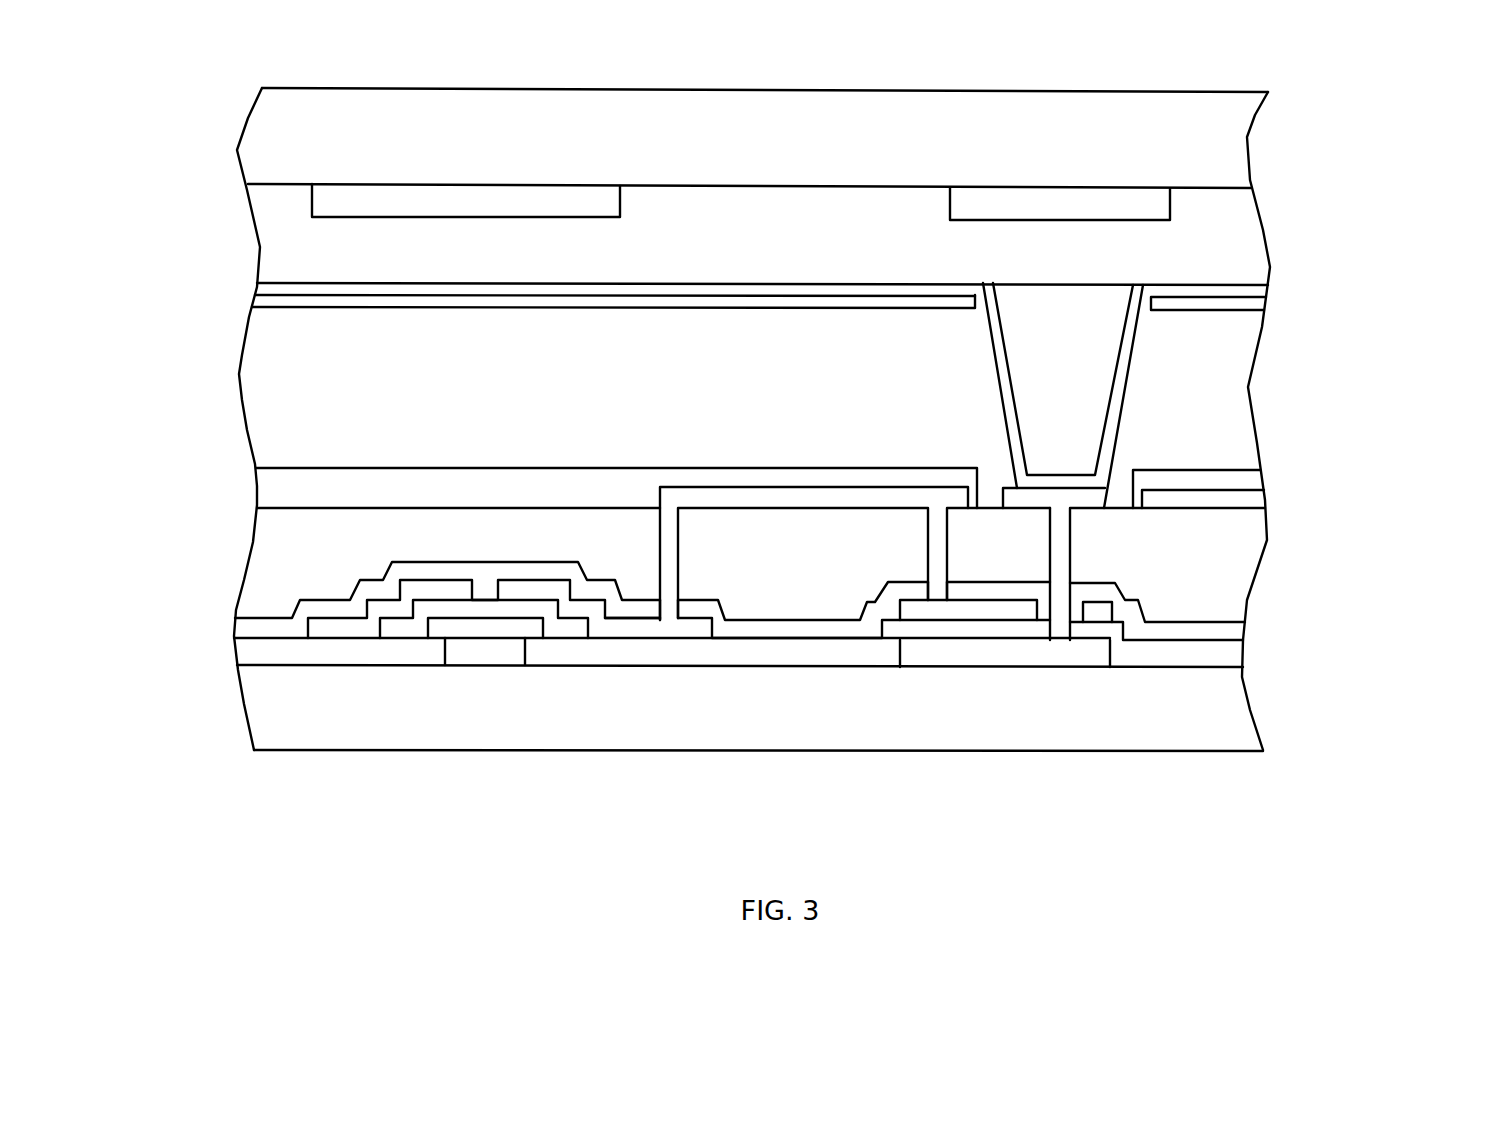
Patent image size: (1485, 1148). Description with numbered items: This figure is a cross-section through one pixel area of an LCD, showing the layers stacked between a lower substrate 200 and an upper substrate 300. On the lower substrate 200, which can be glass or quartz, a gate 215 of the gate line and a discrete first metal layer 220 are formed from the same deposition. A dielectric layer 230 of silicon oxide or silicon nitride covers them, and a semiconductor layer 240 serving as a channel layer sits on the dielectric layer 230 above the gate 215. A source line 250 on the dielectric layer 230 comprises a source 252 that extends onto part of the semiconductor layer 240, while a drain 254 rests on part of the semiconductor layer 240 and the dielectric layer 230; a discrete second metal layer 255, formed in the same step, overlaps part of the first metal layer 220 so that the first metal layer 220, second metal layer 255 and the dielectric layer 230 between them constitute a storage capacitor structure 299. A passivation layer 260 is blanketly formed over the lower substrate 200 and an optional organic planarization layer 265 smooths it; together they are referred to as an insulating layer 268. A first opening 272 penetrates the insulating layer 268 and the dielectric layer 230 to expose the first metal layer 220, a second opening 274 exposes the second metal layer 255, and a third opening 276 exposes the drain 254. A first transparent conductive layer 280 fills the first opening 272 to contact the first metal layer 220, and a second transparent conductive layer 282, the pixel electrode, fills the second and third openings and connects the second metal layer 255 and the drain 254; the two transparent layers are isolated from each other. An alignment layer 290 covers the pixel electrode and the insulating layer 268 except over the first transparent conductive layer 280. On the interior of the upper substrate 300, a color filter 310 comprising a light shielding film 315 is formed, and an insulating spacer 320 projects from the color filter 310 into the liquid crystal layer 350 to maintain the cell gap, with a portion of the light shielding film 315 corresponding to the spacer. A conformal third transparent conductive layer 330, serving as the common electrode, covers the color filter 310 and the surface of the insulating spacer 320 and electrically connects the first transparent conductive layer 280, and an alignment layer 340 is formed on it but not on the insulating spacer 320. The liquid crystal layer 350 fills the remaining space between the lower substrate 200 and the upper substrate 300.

The lower substrate 200 is at (1237, 712).
The gate 215 is at (498, 655).
The first metal layer 220 is at (1040, 655).
The dielectric layer 230 is at (1237, 656).
The semiconductor layer 240 is at (568, 630).
The source line 250 is at (345, 632).
The source 252 is at (433, 593).
The drain 254 is at (637, 630).
The second metal layer 255 is at (970, 615).
The passivation layer 260 is at (1237, 630).
The organic planarization layer 265 is at (1242, 576).
The insulating layer 268 is at (1402, 563).
The first opening 272 is at (1073, 532).
The second opening 274 is at (927, 562).
The third opening 276 is at (682, 577).
The first transparent conductive layer 280 is at (1095, 500).
The second transparent conductive layer 282 is at (812, 497).
The alignment layer 290 is at (268, 485).
The storage capacitor structure 299 is at (1083, 676).
The upper substrate 300 is at (1240, 142).
The color filter 310 is at (1255, 237).
The light shielding film 315 is at (1157, 202).
The insulating spacer 320 is at (1103, 377).
The third transparent conductive layer 330 is at (1255, 290).
The alignment layer 340 is at (262, 296).
The liquid crystal layer 350 is at (250, 399).